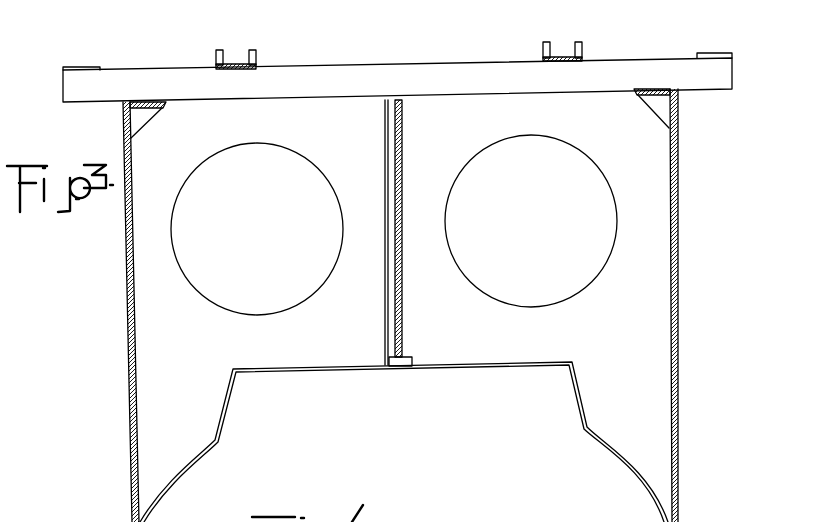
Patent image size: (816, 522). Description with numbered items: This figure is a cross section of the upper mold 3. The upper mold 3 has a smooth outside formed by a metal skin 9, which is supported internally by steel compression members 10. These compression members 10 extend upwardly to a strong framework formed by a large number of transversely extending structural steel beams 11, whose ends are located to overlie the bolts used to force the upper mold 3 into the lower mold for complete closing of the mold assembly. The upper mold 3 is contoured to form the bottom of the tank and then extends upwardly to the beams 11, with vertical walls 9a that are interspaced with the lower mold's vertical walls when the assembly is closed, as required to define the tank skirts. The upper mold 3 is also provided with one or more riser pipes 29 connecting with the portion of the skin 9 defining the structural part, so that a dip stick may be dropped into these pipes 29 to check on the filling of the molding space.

The upper mold 3 is at (413, 305).
The metal skin 9 is at (413, 305).
The vertical wall 9a is at (125, 267).
The steel compression member 10 is at (204, 316).
The structural steel beam 11 is at (460, 78).
The riser pipe 29 is at (403, 148).